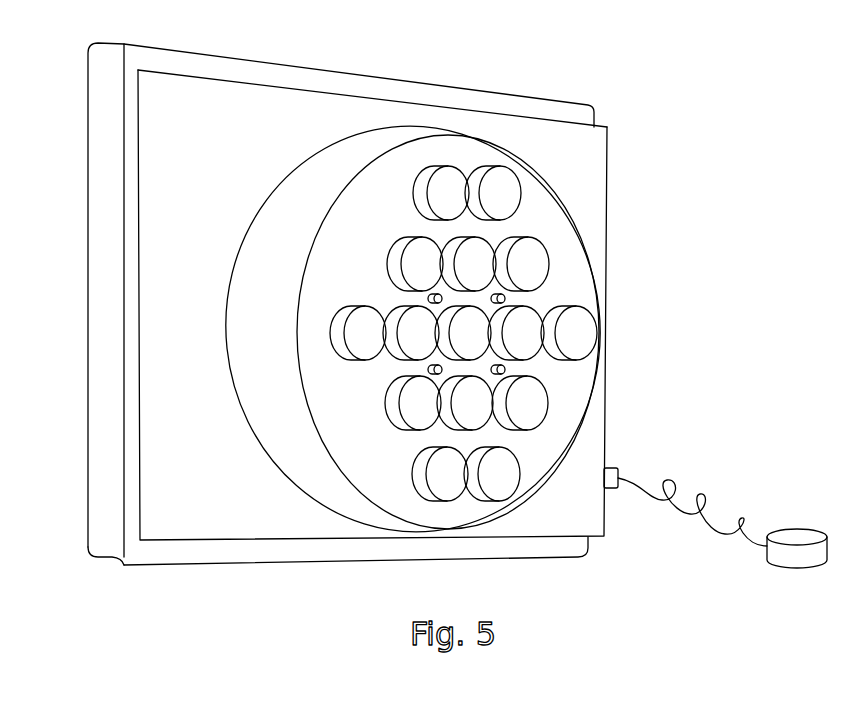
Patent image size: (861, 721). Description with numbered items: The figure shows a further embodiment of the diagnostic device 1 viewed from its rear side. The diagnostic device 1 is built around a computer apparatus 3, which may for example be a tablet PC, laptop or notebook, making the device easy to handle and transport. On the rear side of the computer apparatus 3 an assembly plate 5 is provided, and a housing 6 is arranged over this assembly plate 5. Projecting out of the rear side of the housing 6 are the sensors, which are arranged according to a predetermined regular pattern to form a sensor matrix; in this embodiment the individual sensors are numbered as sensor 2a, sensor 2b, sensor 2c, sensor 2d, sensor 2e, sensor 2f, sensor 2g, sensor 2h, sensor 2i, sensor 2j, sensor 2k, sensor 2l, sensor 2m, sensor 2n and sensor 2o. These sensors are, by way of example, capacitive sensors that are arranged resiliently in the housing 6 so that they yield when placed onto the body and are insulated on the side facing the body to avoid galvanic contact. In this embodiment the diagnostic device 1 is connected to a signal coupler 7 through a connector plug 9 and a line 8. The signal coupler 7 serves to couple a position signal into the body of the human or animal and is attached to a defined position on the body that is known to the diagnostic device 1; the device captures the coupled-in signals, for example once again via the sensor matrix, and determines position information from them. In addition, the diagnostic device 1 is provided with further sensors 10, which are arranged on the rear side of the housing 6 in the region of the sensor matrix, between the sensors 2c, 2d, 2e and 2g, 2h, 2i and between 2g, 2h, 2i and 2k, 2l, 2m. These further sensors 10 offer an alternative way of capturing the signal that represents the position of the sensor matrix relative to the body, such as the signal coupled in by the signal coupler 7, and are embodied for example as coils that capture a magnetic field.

The diagnostic device 1 is at (433, 319).
The sensor 2a is at (441, 193).
The sensor 2b is at (493, 193).
The sensor 2c is at (415, 264).
The sensor 2d is at (468, 264).
The sensor 2e is at (521, 264).
The sensor 2f is at (358, 333).
The sensor 2g is at (411, 333).
The sensor 2h is at (463, 333).
The sensor 2i is at (516, 333).
The sensor 2j is at (569, 333).
The sensor 2k is at (413, 403).
The sensor 2l is at (465, 403).
The sensor 2m is at (520, 403).
The sensor 2n is at (440, 474).
The sensor 2o is at (492, 474).
The computer apparatus 3 is at (105, 92).
The assembly plate 5 is at (585, 147).
The housing 6 is at (328, 164).
The signal coupler 7 is at (800, 560).
The line 8 is at (705, 497).
The connector plug 9 is at (618, 468).
The further sensors 10 is at (428, 295).